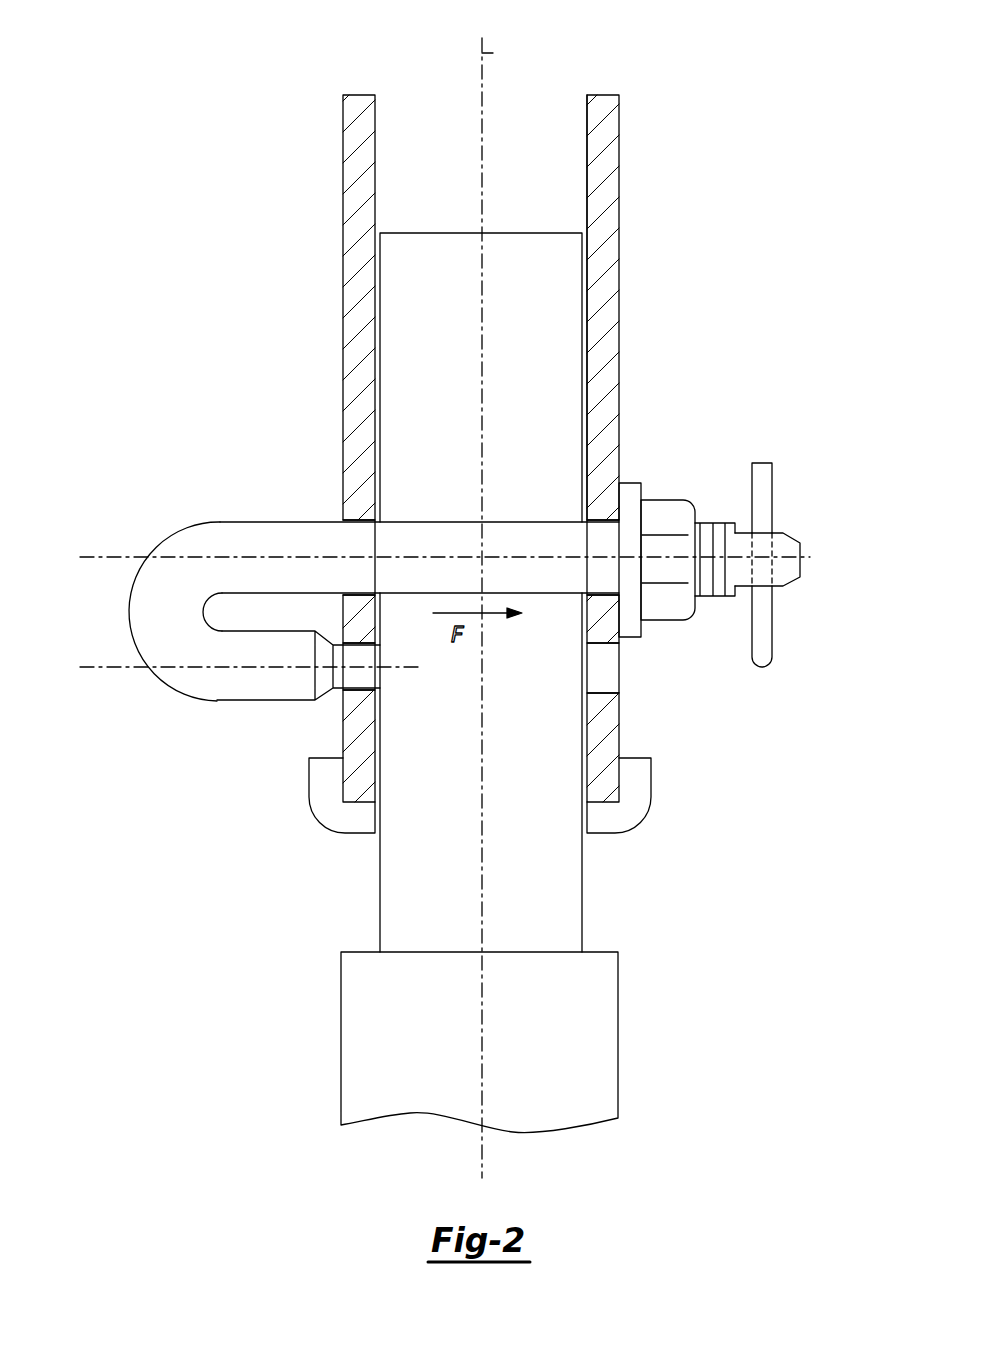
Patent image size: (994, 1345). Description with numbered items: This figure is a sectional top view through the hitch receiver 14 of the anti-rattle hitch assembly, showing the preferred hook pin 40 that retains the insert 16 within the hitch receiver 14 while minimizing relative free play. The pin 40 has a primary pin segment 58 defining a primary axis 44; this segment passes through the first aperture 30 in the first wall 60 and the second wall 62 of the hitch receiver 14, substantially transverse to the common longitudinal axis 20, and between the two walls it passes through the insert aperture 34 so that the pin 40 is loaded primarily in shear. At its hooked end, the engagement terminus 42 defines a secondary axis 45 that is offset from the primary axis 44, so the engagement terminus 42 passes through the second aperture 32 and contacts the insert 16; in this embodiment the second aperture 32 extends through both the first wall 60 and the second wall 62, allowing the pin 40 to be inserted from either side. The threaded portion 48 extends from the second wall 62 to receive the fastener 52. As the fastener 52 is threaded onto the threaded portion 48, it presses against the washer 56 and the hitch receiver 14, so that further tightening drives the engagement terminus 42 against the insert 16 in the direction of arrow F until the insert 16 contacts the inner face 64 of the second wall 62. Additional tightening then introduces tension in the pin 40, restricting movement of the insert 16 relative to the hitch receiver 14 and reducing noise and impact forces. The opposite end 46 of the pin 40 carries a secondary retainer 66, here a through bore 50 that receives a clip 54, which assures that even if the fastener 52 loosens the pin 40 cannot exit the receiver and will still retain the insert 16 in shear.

The hitch receiver 14 is at (488, 434).
The insert 16 is at (632, 1000).
The common longitudinal axis 20 is at (494, 52).
The first aperture 30 is at (336, 520).
The second aperture 32 is at (342, 692).
The insert aperture 34 is at (405, 520).
The hook pin 40 is at (441, 602).
The engagement terminus 42 is at (228, 700).
The primary axis 44 is at (86, 556).
The secondary axis 45 is at (89, 668).
The opposite end 46 is at (730, 519).
The threaded portion 48 is at (708, 530).
The through bore 50 is at (774, 523).
The fastener 52 is at (664, 508).
The clip 54 is at (770, 474).
The washer 56 is at (628, 488).
The primary pin segment 58 is at (248, 527).
The first wall 60 is at (362, 100).
The second wall 62 is at (606, 100).
The inner face 64 is at (588, 134).
The secondary retainer 66 is at (791, 650).